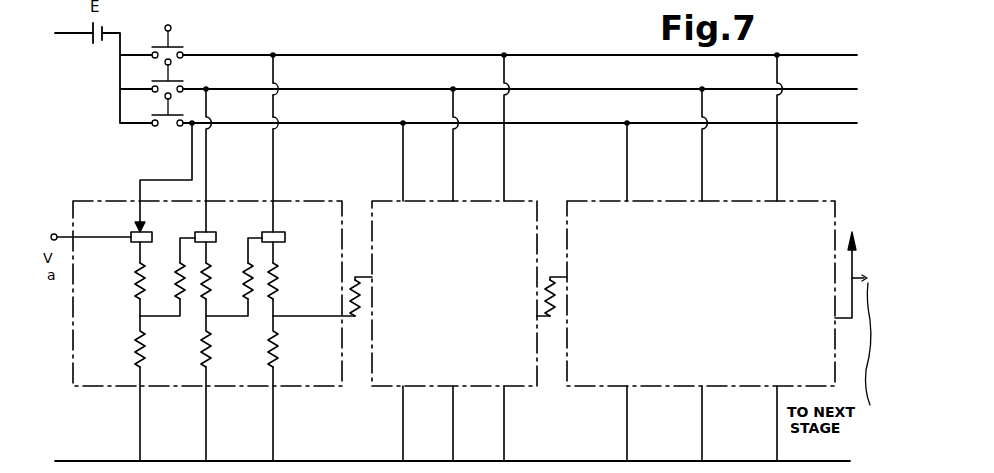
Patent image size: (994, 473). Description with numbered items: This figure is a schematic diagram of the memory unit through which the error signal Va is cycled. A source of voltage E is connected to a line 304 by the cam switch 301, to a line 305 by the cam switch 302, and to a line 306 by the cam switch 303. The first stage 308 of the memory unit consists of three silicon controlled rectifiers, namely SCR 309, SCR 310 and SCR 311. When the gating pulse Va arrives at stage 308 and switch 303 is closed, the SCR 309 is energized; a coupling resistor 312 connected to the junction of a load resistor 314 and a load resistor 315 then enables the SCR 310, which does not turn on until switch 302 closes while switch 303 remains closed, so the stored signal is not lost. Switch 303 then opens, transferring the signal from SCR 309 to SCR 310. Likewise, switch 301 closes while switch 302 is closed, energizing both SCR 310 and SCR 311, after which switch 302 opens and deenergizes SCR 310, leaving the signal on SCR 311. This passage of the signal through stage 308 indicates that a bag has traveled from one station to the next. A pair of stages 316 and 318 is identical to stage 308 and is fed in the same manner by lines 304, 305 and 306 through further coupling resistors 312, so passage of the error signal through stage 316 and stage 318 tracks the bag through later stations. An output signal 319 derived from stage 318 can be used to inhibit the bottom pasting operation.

The cam switch 301 is at (182, 36).
The cam switch 302 is at (194, 71).
The cam switch 303 is at (167, 127).
The line 304 is at (365, 55).
The line 305 is at (367, 89).
The line 306 is at (364, 123).
The first stage 308 is at (95, 386).
The silicon controlled rectifier 309 is at (136, 226).
The silicon controlled rectifier 310 is at (198, 231).
The silicon controlled rectifier 311 is at (285, 232).
The coupling resistor 312 is at (173, 300).
The load resistor 314 is at (137, 285).
The load resistor 315 is at (145, 349).
The stage 316 is at (522, 386).
The stage 318 is at (752, 387).
The output signal 319 is at (849, 232).